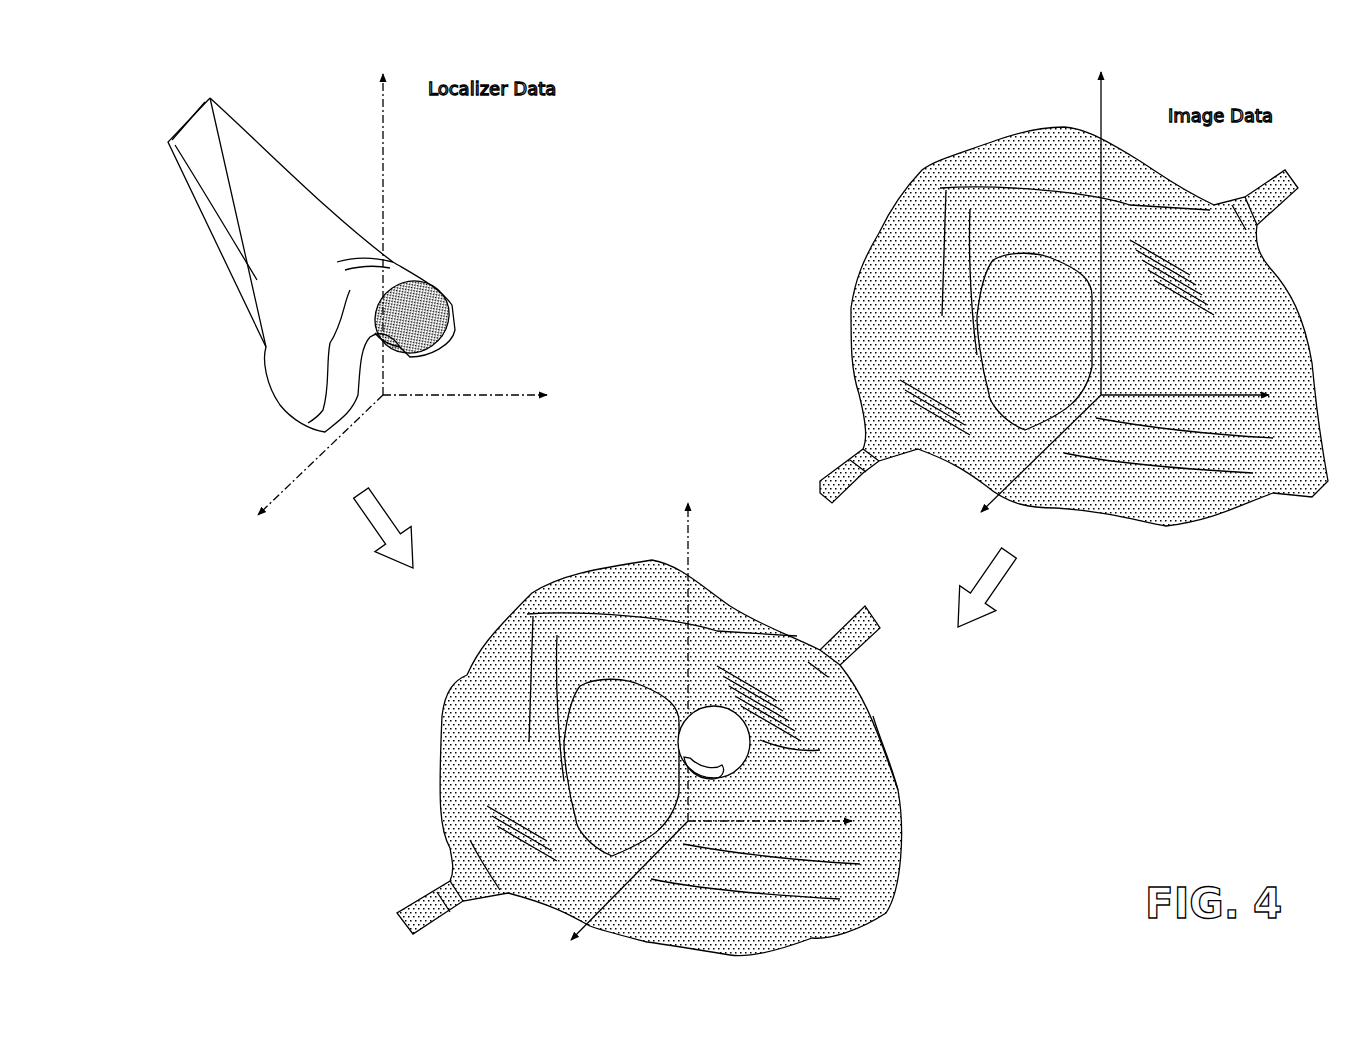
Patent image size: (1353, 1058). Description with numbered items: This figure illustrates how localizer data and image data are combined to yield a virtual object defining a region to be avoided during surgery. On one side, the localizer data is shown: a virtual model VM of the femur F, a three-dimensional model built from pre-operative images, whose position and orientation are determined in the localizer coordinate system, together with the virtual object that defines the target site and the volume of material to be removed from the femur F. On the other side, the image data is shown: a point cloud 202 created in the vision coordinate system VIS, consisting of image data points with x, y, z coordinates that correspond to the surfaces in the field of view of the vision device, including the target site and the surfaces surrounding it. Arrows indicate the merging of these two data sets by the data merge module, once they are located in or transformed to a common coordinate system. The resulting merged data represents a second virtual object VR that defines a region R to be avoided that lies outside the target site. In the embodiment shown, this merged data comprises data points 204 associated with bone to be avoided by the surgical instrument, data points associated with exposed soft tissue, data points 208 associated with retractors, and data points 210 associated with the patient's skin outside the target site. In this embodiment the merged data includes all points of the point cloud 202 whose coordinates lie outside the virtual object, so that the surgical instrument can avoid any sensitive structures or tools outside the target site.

The femur F is at (241, 165).
The virtual model VM is at (290, 264).
The vision coordinate system VIS is at (1103, 108).
The point cloud 202 is at (914, 151).
The second virtual object VR is at (470, 690).
The region to be avoided R is at (806, 916).
The data points associated with bone 204 is at (585, 797).
The data points associated with retractors 208 is at (462, 840).
The data points associated with skin 210 is at (887, 767).